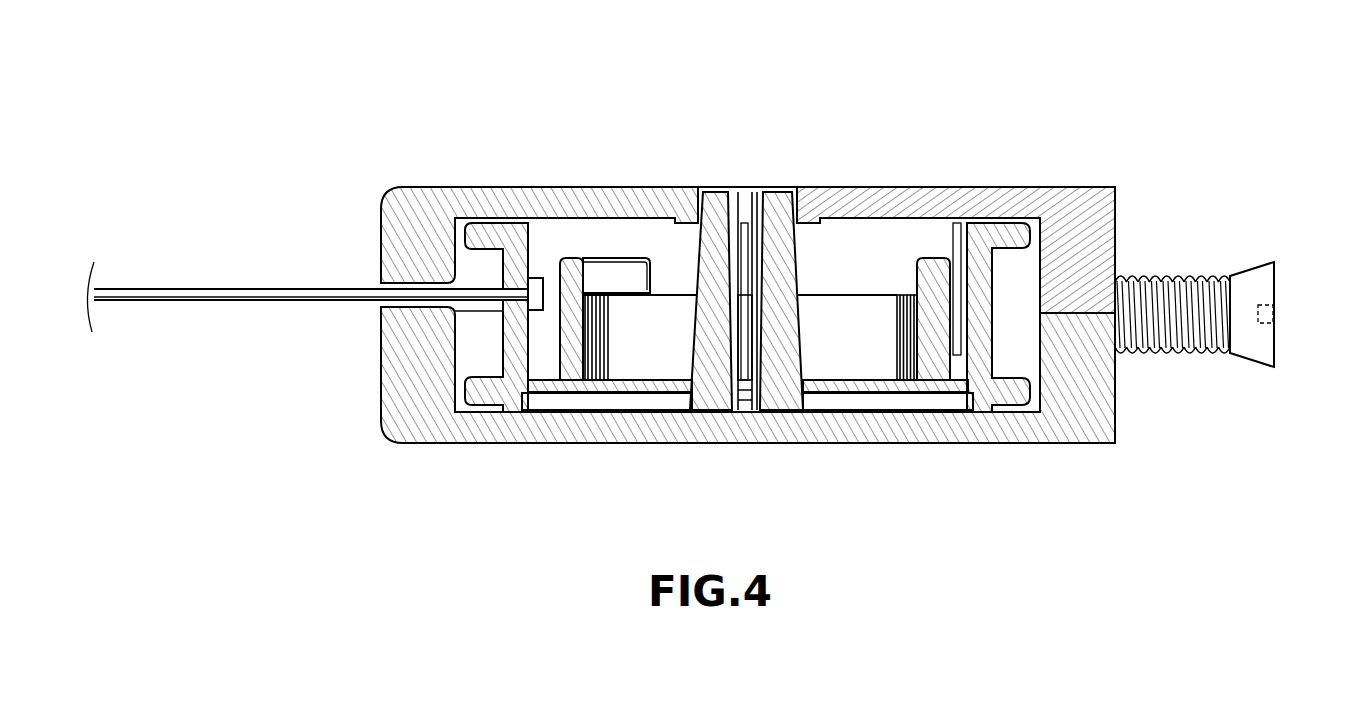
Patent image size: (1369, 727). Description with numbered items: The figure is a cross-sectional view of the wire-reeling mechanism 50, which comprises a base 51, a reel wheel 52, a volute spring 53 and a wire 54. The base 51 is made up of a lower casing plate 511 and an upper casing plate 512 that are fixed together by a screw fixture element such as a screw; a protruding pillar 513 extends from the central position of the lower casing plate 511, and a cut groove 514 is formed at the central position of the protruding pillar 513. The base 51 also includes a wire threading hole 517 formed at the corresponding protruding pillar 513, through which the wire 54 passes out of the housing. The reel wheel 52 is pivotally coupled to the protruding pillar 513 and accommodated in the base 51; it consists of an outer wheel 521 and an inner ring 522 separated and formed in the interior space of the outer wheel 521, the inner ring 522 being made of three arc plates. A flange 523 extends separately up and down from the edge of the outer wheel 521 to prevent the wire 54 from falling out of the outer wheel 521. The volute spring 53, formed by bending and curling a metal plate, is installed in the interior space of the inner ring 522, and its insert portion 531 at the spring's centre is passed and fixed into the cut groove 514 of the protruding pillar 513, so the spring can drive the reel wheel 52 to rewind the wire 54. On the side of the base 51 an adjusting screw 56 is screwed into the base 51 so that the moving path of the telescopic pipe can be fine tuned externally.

The wire-reeling mechanism 50 is at (999, 46).
The base 51 is at (1118, 231).
The lower casing plate 511 is at (1085, 382).
The upper casing plate 512 is at (1070, 207).
The wire threading hole 517 is at (383, 305).
The reel wheel 52 is at (503, 268).
The outer wheel 521 is at (502, 342).
The flange 523 is at (483, 237).
The inner ring 522 is at (572, 267).
The volute spring 53 is at (899, 284).
The protruding pillar 513 is at (717, 205).
The cut groove 514 is at (763, 228).
The insert portion 531 is at (747, 340).
The wire 54 is at (228, 292).
The adjusting screw 56 is at (1262, 290).